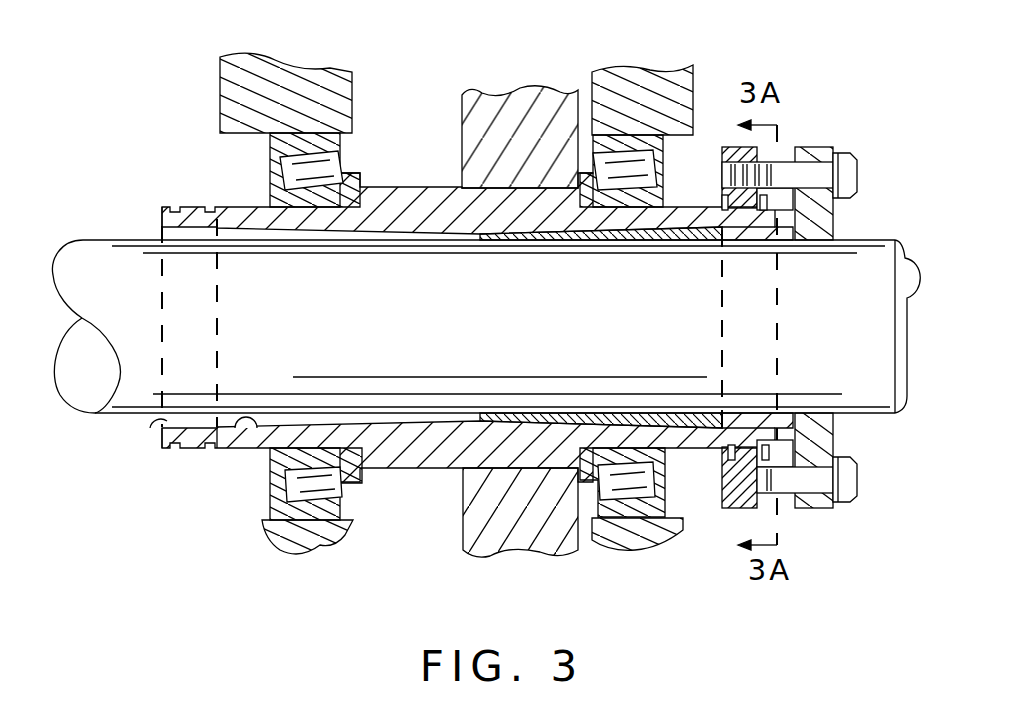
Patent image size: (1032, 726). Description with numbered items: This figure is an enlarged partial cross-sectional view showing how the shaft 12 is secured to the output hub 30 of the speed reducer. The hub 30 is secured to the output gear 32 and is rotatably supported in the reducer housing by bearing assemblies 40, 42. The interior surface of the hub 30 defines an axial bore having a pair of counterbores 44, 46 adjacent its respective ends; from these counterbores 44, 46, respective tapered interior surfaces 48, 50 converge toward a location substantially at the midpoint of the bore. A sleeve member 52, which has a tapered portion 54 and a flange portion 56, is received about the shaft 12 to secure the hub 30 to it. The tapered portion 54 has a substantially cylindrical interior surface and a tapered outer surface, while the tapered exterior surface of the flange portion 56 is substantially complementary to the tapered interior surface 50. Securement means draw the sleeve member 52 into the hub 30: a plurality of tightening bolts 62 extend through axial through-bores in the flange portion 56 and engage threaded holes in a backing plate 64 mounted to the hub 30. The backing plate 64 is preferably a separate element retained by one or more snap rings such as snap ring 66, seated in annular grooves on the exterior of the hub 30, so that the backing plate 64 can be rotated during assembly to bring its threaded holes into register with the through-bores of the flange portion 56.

The shaft 12 is at (912, 270).
The output hub 30 is at (395, 186).
The output gear 32 is at (462, 128).
The bearing assembly 40 is at (268, 172).
The bearing assembly 42 is at (662, 172).
The counterbore 44 is at (160, 428).
The counterbore 46 is at (720, 227).
The tapered interior surface 48 is at (233, 450).
The tapered interior surface 50 is at (718, 428).
The sleeve member 52 is at (818, 354).
The tapered portion 54 is at (508, 240).
The flange portion 56 is at (814, 147).
The tightening bolts 62 is at (857, 172).
The backing plate 64 is at (745, 507).
The snap ring 66 is at (760, 450).